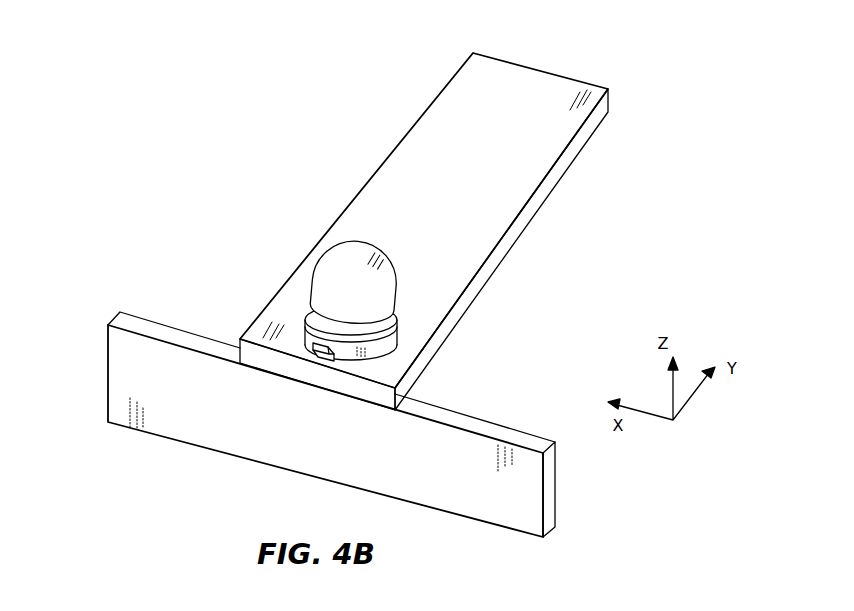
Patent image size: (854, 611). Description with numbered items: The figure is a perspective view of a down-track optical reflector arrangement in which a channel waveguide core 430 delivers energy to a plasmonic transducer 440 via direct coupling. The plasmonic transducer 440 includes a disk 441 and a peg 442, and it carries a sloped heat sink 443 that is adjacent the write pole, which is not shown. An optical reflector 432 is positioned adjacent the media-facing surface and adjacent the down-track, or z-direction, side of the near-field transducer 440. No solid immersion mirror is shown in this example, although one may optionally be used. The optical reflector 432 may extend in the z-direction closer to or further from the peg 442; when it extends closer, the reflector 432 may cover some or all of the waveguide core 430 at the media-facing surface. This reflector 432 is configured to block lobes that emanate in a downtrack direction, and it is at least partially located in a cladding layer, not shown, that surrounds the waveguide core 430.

The channel waveguide core 430 is at (517, 88).
The optical reflector 432 is at (447, 507).
The plasmonic transducer 440 is at (379, 317).
The disk 441 is at (346, 357).
The peg 442 is at (318, 358).
The sloped heat sink 443 is at (333, 250).